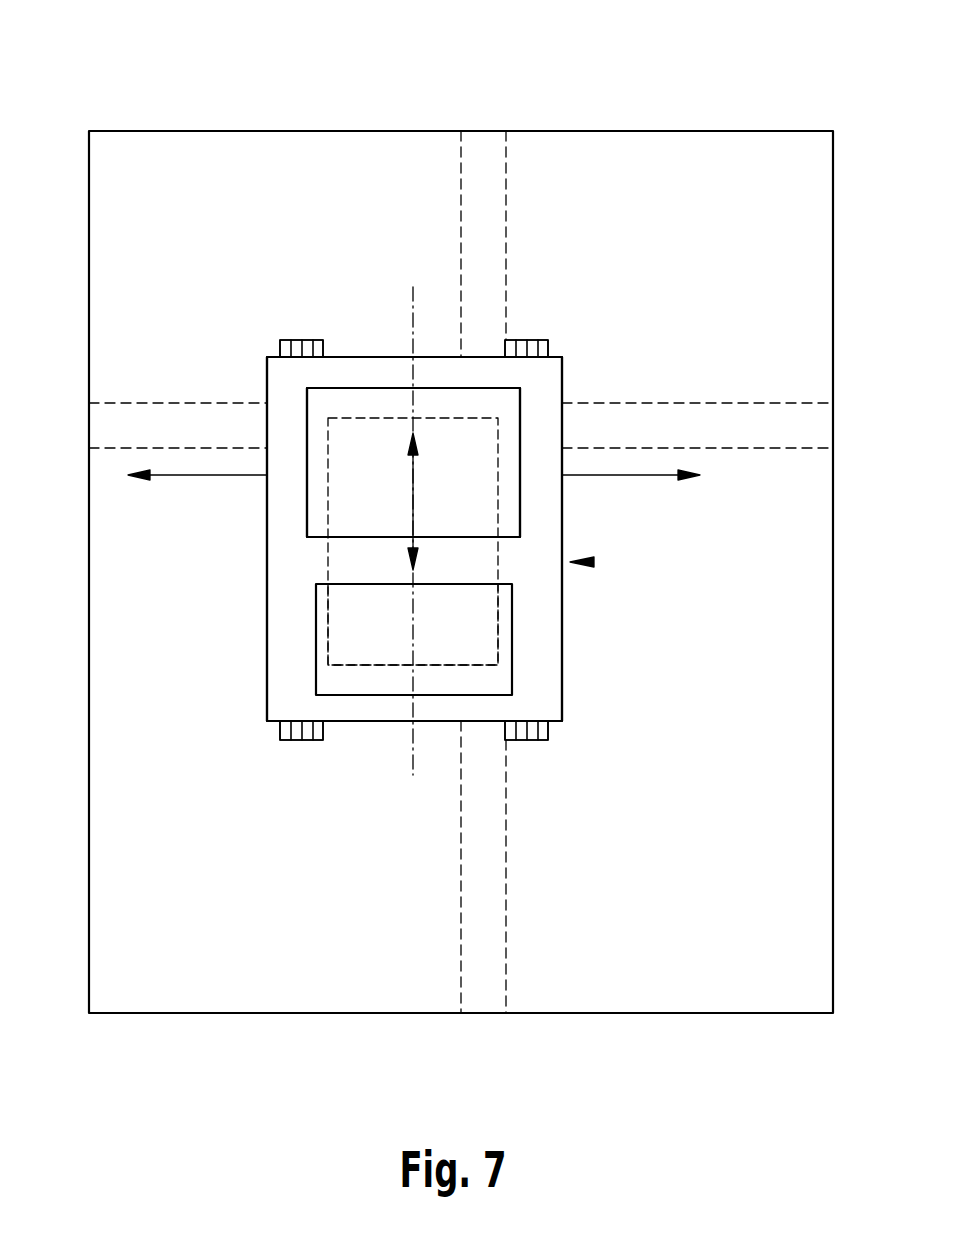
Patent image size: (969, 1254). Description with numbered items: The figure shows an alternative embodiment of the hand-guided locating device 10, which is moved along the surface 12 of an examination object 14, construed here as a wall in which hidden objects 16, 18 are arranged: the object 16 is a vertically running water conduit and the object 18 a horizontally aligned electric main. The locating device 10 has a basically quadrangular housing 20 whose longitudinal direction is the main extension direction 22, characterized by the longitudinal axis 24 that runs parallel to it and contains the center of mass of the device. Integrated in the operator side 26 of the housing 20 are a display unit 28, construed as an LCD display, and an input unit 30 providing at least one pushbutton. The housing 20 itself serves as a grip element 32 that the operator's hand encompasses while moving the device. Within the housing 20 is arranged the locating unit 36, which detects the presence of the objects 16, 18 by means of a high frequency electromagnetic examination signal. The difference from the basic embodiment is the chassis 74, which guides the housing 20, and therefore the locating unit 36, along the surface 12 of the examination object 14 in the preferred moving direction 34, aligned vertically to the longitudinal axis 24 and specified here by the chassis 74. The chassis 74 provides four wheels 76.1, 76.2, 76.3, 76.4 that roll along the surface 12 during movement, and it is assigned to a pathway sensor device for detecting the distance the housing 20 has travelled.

The locating device 10 is at (608, 300).
The surface 12 is at (775, 172).
The examination object 14 is at (256, 96).
The object 16 is at (506, 222).
The object 18 is at (771, 401).
The housing 20 is at (531, 376).
The main extension direction 22 is at (413, 488).
The longitudinal axis 24 is at (413, 330).
The operator side 26 is at (282, 392).
The display unit 28 is at (318, 515).
The input unit 30 is at (506, 634).
The grip element 32 is at (592, 562).
The preferred moving direction 34 is at (193, 479).
The locating unit 36 is at (343, 638).
The chassis 74 is at (296, 300).
The wheel 76.1 is at (282, 345).
The wheel 76.2 is at (535, 350).
The wheel 76.3 is at (303, 730).
The wheel 76.4 is at (533, 730).